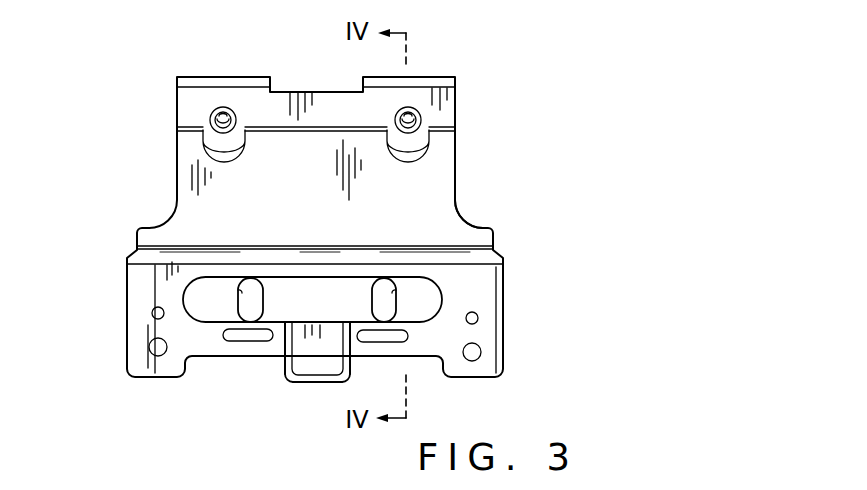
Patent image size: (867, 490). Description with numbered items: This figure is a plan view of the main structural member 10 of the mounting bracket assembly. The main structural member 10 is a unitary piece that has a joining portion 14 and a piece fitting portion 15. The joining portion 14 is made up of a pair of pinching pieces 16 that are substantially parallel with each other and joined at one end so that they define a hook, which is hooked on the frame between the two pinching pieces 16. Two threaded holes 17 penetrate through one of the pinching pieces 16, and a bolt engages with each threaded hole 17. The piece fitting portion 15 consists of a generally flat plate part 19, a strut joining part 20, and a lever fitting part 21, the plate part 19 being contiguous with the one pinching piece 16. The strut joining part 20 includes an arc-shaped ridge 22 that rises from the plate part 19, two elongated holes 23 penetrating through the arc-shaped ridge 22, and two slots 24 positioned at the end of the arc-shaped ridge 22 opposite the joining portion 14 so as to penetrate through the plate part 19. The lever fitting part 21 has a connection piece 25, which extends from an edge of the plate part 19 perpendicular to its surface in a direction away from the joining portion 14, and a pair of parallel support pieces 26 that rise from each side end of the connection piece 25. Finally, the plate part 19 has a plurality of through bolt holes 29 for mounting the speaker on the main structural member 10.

The main structural member 10 is at (482, 167).
The joining portion 14 is at (456, 103).
The piece fitting portion 15 is at (462, 210).
The pinching pieces 16 is at (187, 107).
The threaded holes 17 is at (225, 107).
The plate part 19 is at (310, 230).
The strut joining part 20 is at (270, 278).
The lever fitting part 21 is at (283, 370).
The arc-shaped ridge 22 is at (207, 298).
The elongated holes 23 is at (243, 293).
The slots 24 is at (238, 337).
The connection piece 25 is at (317, 383).
The support pieces 26 is at (278, 346).
The through bolt holes 29 is at (153, 344).